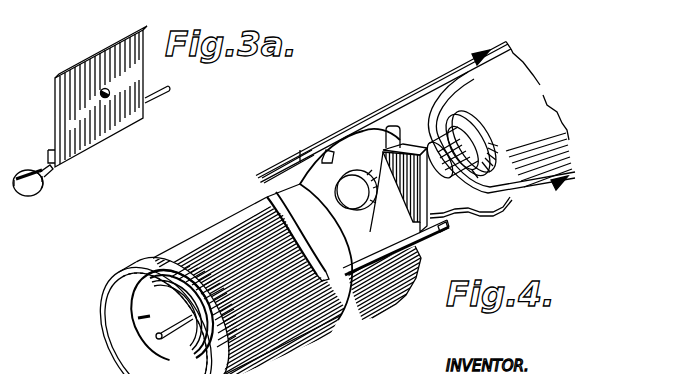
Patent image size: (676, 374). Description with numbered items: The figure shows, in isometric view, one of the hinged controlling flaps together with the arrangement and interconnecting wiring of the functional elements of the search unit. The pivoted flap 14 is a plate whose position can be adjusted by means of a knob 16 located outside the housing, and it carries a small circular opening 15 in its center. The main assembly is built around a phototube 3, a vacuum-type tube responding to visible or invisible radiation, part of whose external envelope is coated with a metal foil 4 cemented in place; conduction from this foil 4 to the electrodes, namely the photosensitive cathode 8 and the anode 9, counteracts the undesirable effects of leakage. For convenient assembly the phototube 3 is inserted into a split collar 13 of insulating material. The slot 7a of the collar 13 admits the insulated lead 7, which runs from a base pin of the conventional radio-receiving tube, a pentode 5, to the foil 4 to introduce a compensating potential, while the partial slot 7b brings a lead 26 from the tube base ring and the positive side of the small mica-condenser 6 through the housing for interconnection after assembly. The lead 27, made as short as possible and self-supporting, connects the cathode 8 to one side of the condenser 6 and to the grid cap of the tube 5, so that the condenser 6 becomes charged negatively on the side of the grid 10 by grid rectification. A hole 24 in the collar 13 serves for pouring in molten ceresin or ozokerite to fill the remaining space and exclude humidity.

In FIG. 4, the phototube 3 is at (110, 292).
In FIG. 4, the metal foil 4 is at (194, 232).
In FIG. 4, the pentode 5 is at (476, 126).
In FIG. 4, the mica-condenser 6 is at (412, 148).
In FIG. 4, the insulated lead 7 is at (466, 216).
In FIG. 4, the slot 7a is at (394, 240).
In FIG. 4, the partial slot 7b is at (296, 160).
In FIG. 4, the photosensitive cathode 8 is at (138, 319).
In FIG. 4, the anode 9 is at (159, 340).
In FIG. 4, the grid 10 is at (481, 134).
In FIG. 4, the split collar 13 is at (262, 190).
In FIG. 3A, the pivoted flap 14 is at (107, 58).
In FIG. 3A, the circular opening 15 is at (108, 90).
In FIG. 3A, the knob 16 is at (31, 168).
In FIG. 4, the hole 24 is at (362, 203).
In FIG. 4, the lead 26 is at (405, 98).
In FIG. 4, the lead 27 is at (440, 234).